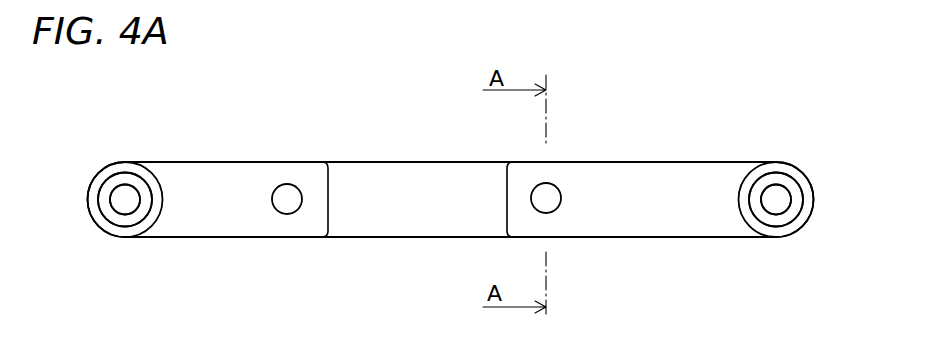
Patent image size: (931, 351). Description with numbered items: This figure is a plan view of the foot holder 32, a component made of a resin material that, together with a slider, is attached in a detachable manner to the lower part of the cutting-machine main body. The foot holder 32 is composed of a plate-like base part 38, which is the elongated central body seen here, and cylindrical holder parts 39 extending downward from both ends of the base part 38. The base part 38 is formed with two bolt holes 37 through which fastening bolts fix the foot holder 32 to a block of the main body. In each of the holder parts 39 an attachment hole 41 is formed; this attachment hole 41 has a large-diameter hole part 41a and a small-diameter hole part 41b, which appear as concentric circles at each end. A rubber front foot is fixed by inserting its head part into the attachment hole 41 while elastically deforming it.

The foot holder 32 is at (638, 145).
The bolt holes 37 is at (292, 185).
The base part 38 is at (387, 168).
The holder parts 39 is at (153, 172).
The attachment hole 41 is at (815, 91).
The large-diameter hole part 41a is at (793, 163).
The small-diameter hole part 41b is at (757, 163).